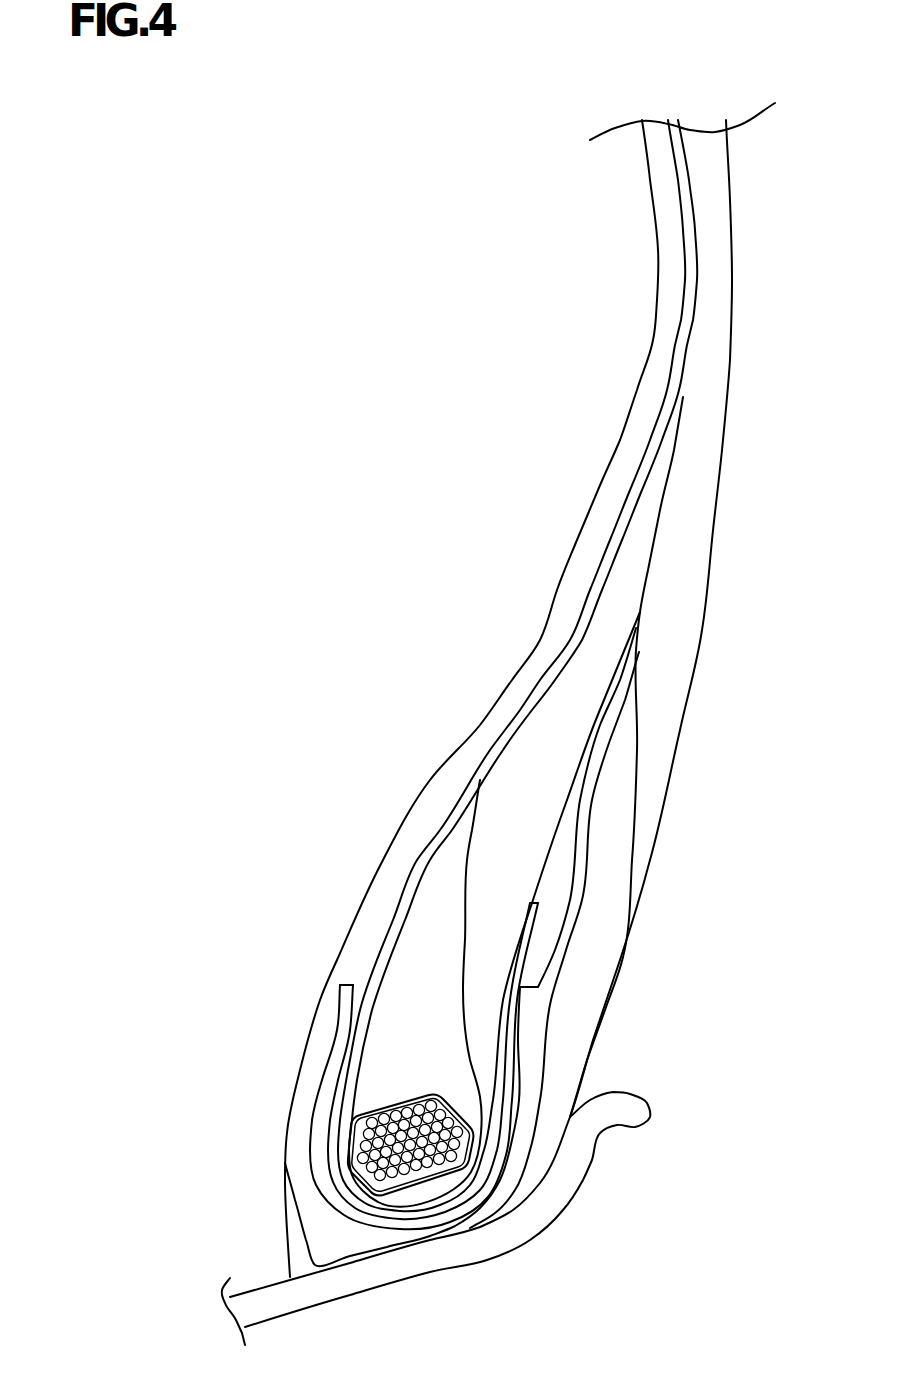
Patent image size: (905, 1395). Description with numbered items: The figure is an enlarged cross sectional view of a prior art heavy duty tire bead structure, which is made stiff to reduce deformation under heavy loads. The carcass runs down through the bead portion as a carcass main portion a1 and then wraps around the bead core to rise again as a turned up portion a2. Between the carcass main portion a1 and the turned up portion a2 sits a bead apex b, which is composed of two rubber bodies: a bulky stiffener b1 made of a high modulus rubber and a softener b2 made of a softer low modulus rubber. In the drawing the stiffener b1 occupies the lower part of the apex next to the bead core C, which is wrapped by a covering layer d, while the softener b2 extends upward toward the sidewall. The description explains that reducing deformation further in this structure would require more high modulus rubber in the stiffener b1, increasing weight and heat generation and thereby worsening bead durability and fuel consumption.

The carcass main portion a1 is at (520, 710).
The turned up portion a2 is at (530, 931).
The bead apex b is at (233, 690).
The stiffener b1 is at (433, 907).
The softener b2 is at (508, 798).
The bead core C is at (413, 1150).
The bead core covering rubber d is at (432, 1180).